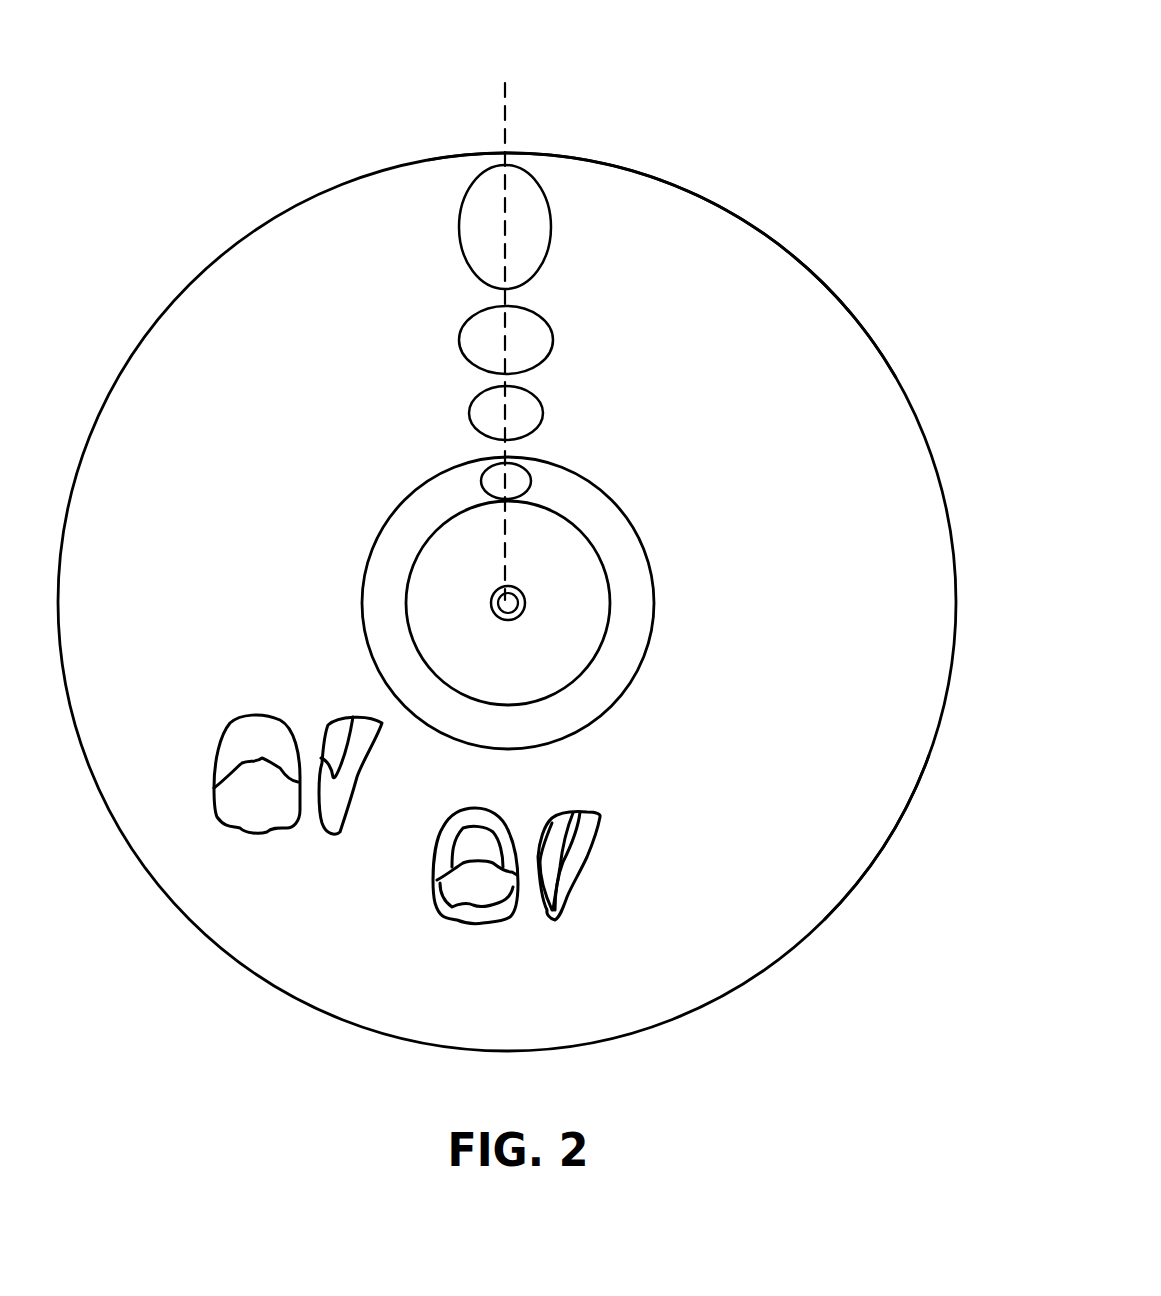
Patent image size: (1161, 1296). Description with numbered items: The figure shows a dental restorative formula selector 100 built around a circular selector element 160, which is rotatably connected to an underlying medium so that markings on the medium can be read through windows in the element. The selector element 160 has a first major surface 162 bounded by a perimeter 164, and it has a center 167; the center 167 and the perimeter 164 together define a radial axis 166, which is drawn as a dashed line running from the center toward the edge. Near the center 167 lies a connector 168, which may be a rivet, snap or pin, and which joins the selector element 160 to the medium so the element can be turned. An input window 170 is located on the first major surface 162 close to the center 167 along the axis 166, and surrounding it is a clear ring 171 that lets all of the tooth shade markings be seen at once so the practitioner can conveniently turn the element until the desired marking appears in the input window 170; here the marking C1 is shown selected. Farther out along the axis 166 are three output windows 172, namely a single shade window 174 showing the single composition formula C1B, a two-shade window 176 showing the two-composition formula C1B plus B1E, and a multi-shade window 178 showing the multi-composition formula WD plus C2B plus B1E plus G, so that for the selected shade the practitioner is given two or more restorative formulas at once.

The dental restorative formula selector 100 is at (777, 98).
The selector element 160 is at (282, 182).
The first major surface 162 is at (862, 833).
The perimeter 164 is at (862, 328).
The radial axis 166 is at (503, 105).
The center 167 is at (520, 593).
The connector 168 is at (498, 618).
The input window 170 is at (533, 481).
The clear ring 171 is at (645, 671).
The output windows 172 is at (600, 158).
The single shade window 174 is at (543, 413).
The two-shade window 176 is at (553, 337).
The multi-shade window 178 is at (552, 232).